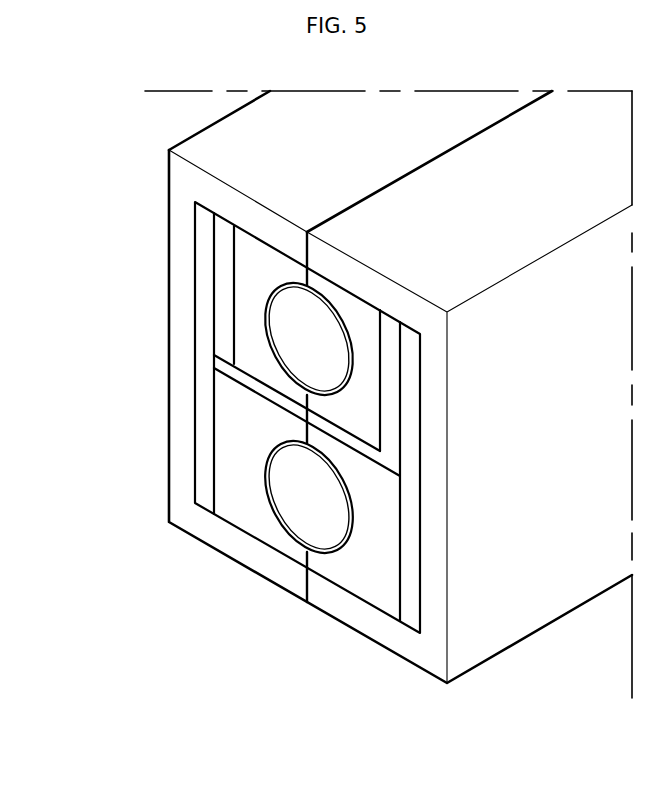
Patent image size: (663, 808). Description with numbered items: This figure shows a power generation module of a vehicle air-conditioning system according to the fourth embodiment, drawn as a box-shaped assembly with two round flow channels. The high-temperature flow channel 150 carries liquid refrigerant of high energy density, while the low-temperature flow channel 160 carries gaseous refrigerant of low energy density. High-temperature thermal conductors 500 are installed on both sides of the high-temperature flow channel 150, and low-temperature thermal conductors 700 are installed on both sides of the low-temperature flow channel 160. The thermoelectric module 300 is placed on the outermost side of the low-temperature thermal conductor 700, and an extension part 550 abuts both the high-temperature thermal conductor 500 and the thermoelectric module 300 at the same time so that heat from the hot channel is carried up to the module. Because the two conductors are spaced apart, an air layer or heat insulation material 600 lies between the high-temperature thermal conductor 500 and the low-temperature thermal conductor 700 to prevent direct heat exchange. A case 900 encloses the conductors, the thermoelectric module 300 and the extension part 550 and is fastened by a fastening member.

The case 900 is at (193, 189).
The thermoelectric module 300 is at (213, 257).
The extension part 550 is at (205, 432).
The low-temperature thermal conductor 700 is at (242, 332).
The heat insulation material 600 is at (248, 386).
The high-temperature thermal conductor 500 is at (237, 487).
The high-temperature flow channel 150 is at (287, 320).
The low-temperature flow channel 160 is at (285, 498).